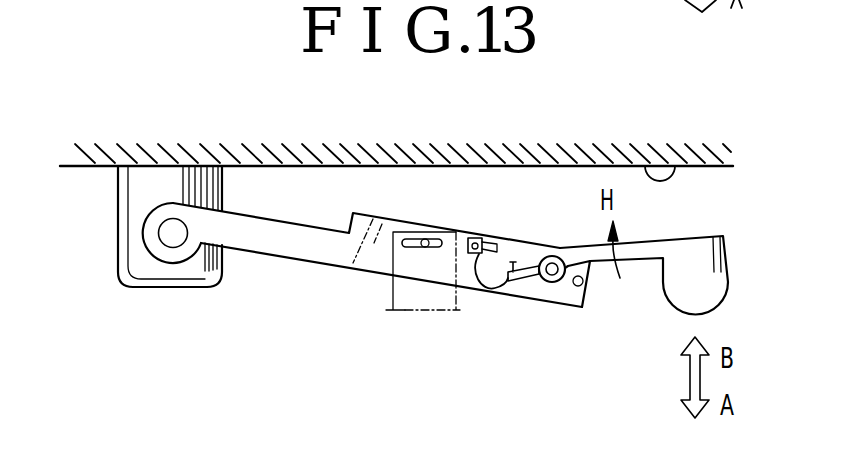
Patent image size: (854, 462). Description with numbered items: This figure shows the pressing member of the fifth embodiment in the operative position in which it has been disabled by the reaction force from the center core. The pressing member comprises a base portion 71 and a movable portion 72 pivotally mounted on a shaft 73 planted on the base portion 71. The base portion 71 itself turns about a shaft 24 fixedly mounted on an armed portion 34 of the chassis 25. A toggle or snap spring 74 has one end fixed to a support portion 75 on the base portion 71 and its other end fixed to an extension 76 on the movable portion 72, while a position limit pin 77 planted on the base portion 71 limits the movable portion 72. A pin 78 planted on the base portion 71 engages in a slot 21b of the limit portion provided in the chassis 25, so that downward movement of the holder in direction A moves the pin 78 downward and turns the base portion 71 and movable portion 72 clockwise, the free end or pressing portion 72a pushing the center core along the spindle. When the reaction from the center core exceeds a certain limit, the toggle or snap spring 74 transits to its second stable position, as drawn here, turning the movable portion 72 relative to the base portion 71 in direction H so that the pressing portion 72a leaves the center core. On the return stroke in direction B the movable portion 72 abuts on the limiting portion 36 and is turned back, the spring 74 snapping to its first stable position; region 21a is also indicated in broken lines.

The chassis 25 is at (150, 160).
The limiting portion 36 is at (658, 166).
The armed portion 34 is at (130, 213).
The shaft 24 is at (173, 247).
The base portion 71 is at (285, 250).
The slot 21b is at (410, 249).
The pin 78 is at (426, 239).
The housing region 21a is at (412, 306).
The support portion 75 is at (478, 236).
The toggle or snap spring 74 is at (492, 289).
The extension 76 is at (527, 282).
The shaft 73 is at (552, 256).
The position limit pin 77 is at (588, 284).
The movable portion 72 is at (643, 259).
The free end or pressing portion 72a is at (715, 268).